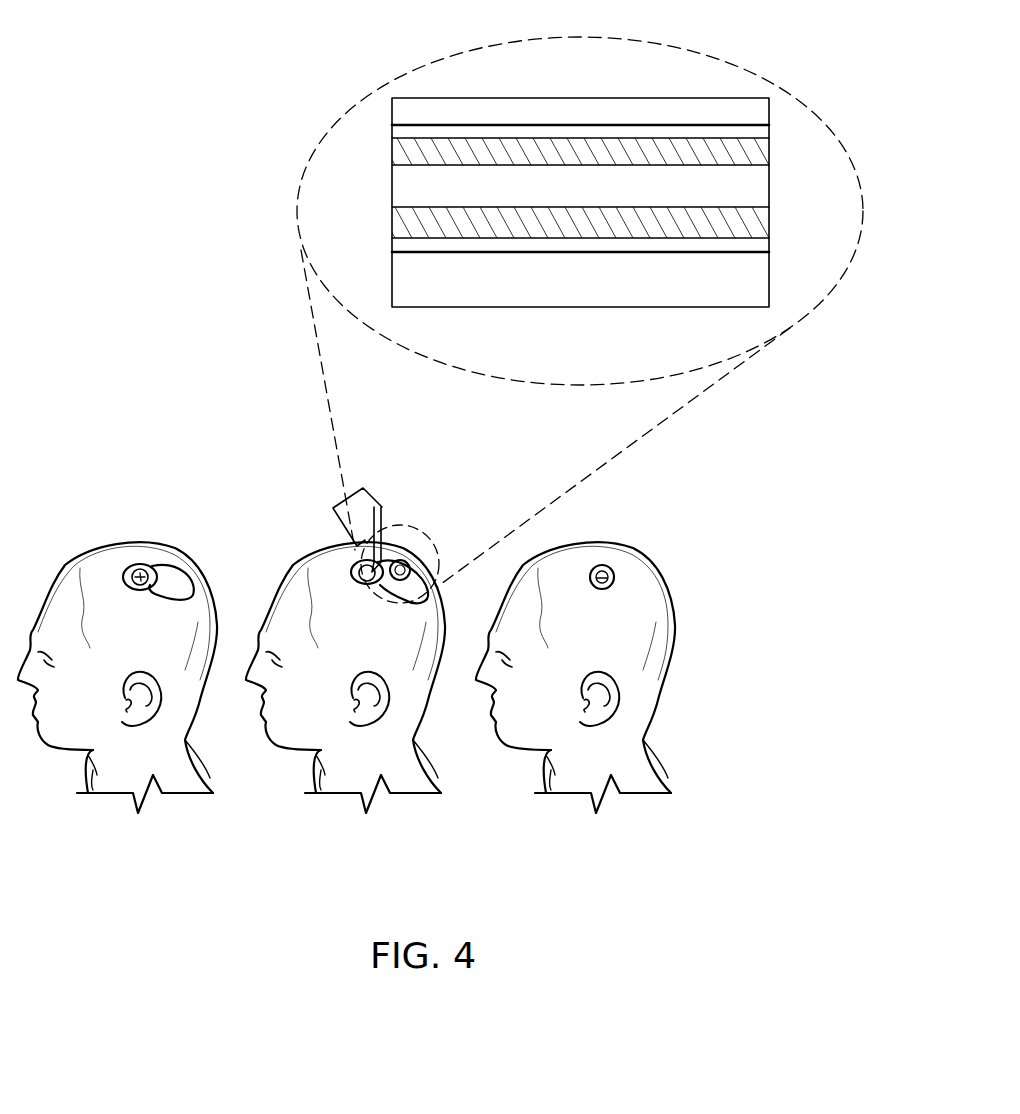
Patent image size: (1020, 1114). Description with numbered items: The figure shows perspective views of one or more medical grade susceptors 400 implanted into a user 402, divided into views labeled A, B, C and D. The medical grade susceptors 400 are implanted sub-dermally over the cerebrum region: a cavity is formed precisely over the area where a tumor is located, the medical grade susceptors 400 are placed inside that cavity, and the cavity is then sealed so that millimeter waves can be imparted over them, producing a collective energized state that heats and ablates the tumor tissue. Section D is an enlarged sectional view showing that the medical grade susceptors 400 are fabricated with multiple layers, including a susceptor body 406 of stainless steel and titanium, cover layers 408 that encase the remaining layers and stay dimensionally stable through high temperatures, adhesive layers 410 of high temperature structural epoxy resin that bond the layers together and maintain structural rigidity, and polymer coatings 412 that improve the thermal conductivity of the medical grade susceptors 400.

The medical grade susceptors 400 is at (152, 563).
The user 402 is at (431, 676).
The susceptor body 406 is at (581, 311).
The cover layers 408 is at (392, 110).
The adhesive layers 410 is at (392, 135).
The polymer coatings 412 is at (769, 153).